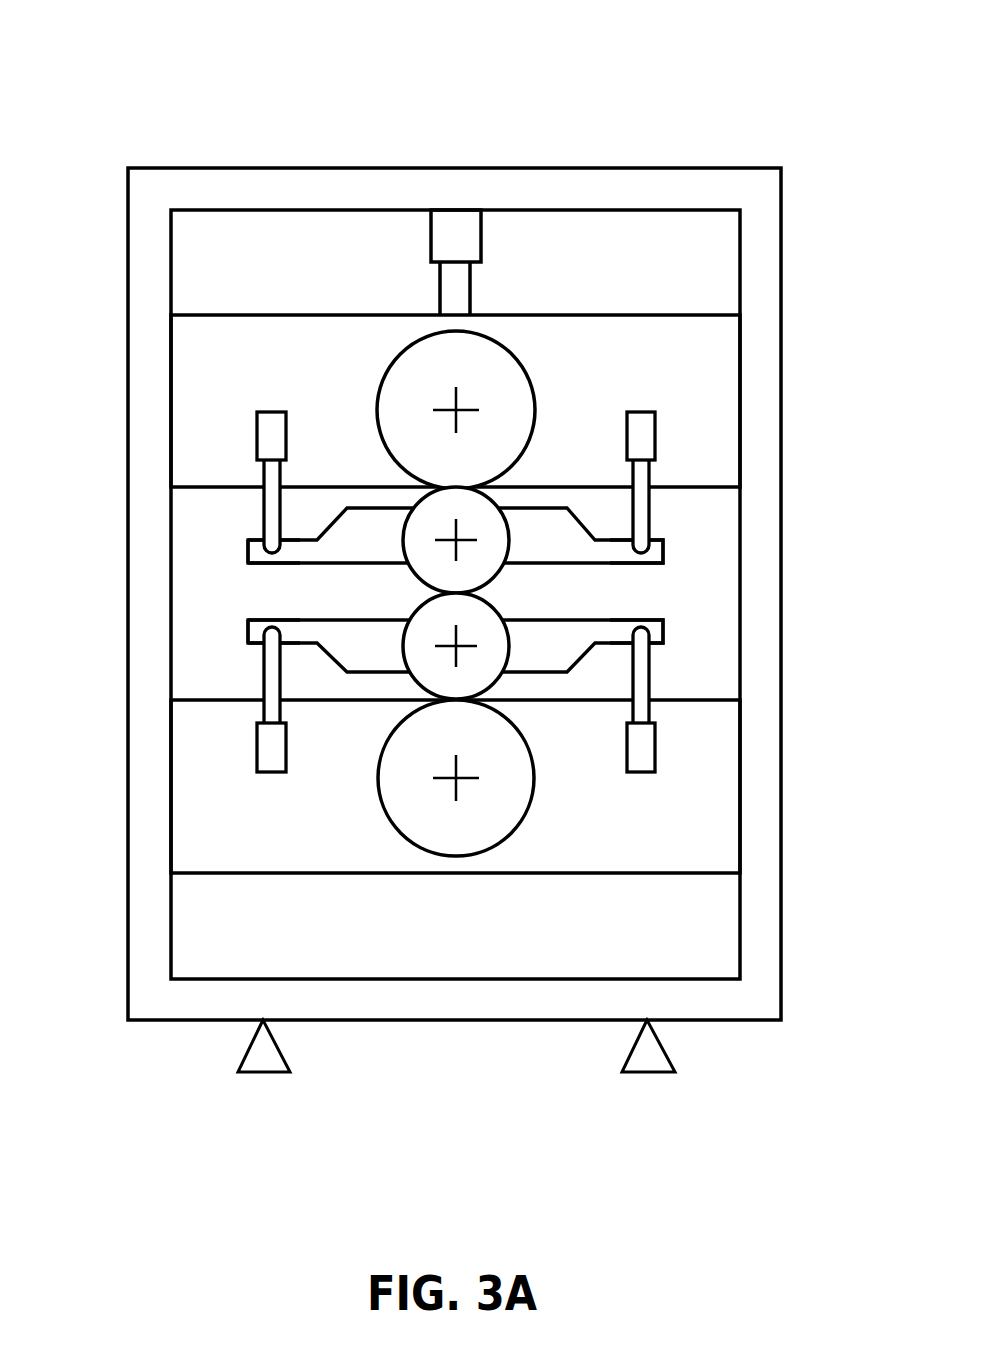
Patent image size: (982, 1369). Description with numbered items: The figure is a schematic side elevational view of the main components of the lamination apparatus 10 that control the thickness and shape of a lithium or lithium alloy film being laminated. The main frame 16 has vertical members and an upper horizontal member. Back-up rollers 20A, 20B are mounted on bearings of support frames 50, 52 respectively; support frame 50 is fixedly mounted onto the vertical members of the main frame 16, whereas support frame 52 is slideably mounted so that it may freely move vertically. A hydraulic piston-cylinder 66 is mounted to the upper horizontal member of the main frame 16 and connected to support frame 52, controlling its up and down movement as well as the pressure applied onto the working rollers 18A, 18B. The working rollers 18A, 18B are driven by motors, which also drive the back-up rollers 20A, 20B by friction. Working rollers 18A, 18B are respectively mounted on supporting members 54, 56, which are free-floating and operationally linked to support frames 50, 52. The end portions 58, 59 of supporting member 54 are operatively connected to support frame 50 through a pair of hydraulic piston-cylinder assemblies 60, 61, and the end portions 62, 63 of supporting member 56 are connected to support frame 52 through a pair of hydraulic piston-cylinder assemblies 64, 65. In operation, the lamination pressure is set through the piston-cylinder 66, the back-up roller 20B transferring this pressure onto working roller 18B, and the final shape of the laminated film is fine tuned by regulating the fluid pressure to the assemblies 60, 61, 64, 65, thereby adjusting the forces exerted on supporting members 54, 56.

The lamination apparatus 10 is at (113, 102).
The main frame 16 is at (722, 168).
The working roller 18A is at (495, 653).
The working roller 18B is at (492, 527).
The back-up roller 20A is at (413, 790).
The back-up roller 20B is at (413, 393).
The support frame 50 is at (677, 812).
The support frame 52 is at (677, 365).
The supporting member 54 is at (370, 632).
The supporting member 56 is at (370, 545).
The end portion 58 is at (250, 630).
The end portion 59 is at (665, 620).
The hydraulic piston-cylinder assembly 60 is at (270, 675).
The hydraulic piston-cylinder assembly 61 is at (645, 660).
The end portion 62 is at (250, 550).
The end portion 63 is at (665, 543).
The hydraulic piston-cylinder assembly 64 is at (270, 508).
The hydraulic piston-cylinder assembly 65 is at (645, 500).
The hydraulic piston-cylinder 66 is at (455, 235).